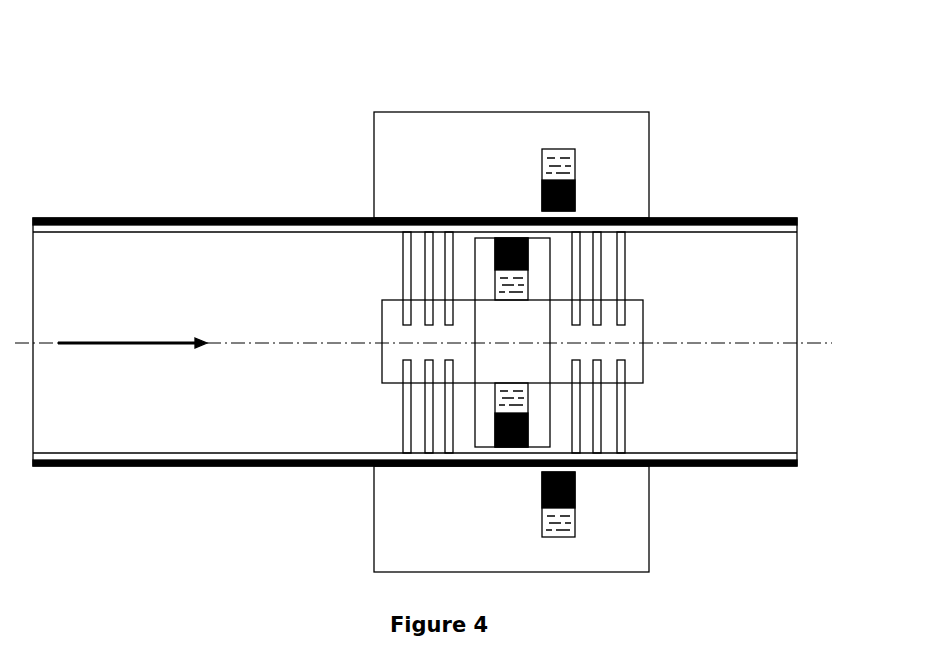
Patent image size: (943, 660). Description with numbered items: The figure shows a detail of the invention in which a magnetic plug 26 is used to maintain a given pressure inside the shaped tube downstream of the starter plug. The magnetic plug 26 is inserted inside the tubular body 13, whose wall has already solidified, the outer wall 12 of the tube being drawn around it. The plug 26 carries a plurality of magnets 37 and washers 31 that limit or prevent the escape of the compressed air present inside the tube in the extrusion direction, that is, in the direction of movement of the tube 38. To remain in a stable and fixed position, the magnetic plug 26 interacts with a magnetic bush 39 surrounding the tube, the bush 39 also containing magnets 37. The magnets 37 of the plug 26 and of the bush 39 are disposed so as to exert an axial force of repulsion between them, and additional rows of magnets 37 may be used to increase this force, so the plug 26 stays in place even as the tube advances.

The pipe 12 is at (68, 218).
The tubular body 13 is at (151, 231).
The magnetic first plug 26 is at (346, 298).
The washers 31 is at (406, 407).
The magnets 37 is at (500, 236).
The direction of movement of the tube 38 is at (140, 345).
The magnetic bush 39 is at (400, 90).